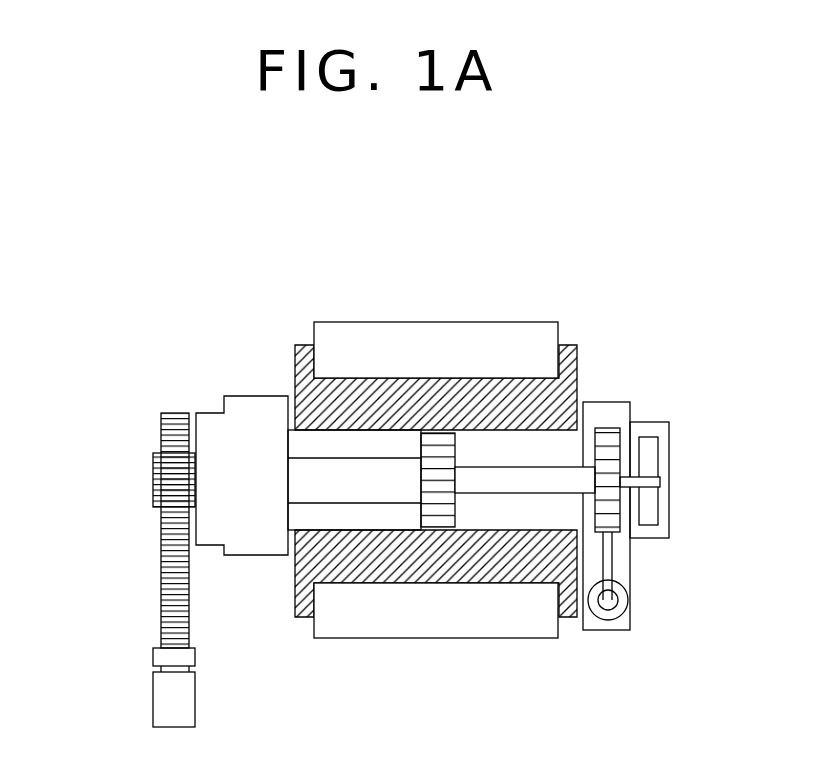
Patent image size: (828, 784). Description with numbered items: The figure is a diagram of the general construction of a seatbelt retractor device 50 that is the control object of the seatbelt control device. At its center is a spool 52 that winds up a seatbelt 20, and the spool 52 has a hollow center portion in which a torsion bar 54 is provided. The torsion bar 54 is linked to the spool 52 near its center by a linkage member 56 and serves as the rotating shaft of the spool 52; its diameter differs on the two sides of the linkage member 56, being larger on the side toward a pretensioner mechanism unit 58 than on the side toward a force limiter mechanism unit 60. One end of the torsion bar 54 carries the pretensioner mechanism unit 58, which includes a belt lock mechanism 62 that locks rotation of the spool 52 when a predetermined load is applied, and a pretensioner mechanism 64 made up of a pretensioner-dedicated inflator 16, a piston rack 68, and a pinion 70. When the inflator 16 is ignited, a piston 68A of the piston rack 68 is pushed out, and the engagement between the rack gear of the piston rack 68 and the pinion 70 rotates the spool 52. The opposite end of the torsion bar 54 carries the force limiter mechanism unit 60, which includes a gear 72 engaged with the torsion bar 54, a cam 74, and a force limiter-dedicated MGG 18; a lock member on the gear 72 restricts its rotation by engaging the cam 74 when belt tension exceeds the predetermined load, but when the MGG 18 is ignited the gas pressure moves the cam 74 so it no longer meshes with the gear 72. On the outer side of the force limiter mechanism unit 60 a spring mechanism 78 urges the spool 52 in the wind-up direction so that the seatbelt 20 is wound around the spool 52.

The seatbelt retractor device 50 is at (545, 257).
The seatbelt 20 is at (427, 328).
The spool 52 is at (300, 346).
The torsion bar 54 is at (488, 462).
The linkage member 56 is at (455, 503).
The pretensioner mechanism unit 58 is at (258, 310).
The force limiter mechanism unit 60 is at (608, 400).
The belt lock mechanism 62 is at (245, 396).
The pretensioner mechanism 64 is at (173, 396).
The piston rack 68 is at (189, 605).
The piston 68A is at (195, 655).
The pinion 70 is at (157, 478).
The gear 72 is at (623, 518).
The cam 74 is at (612, 556).
The spring mechanism 78 is at (650, 422).
The force limiter-dedicated micro gas generator (MGG) 18 is at (607, 615).
The pretensioner-dedicated gas generator (inflator) 16 is at (195, 700).